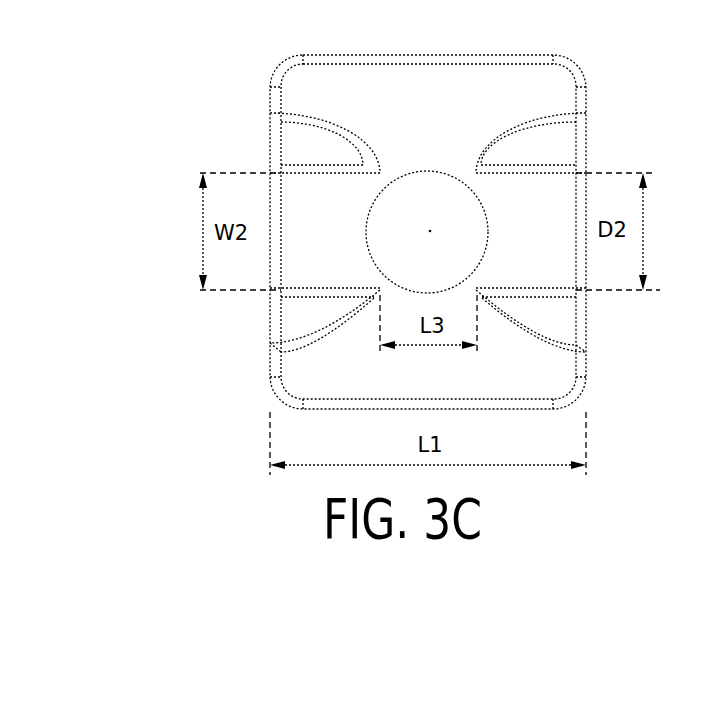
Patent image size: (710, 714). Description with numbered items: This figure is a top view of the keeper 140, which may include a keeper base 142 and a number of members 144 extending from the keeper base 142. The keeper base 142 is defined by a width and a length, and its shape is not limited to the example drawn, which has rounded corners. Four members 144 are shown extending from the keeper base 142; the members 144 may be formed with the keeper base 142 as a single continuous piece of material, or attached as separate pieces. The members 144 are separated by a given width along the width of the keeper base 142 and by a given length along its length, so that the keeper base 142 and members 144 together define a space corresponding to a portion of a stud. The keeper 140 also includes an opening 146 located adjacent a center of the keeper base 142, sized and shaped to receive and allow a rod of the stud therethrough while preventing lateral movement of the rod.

The keeper 140 is at (669, 38).
The keeper base 142 is at (333, 363).
The members 144 is at (300, 145).
The opening 146 is at (437, 203).